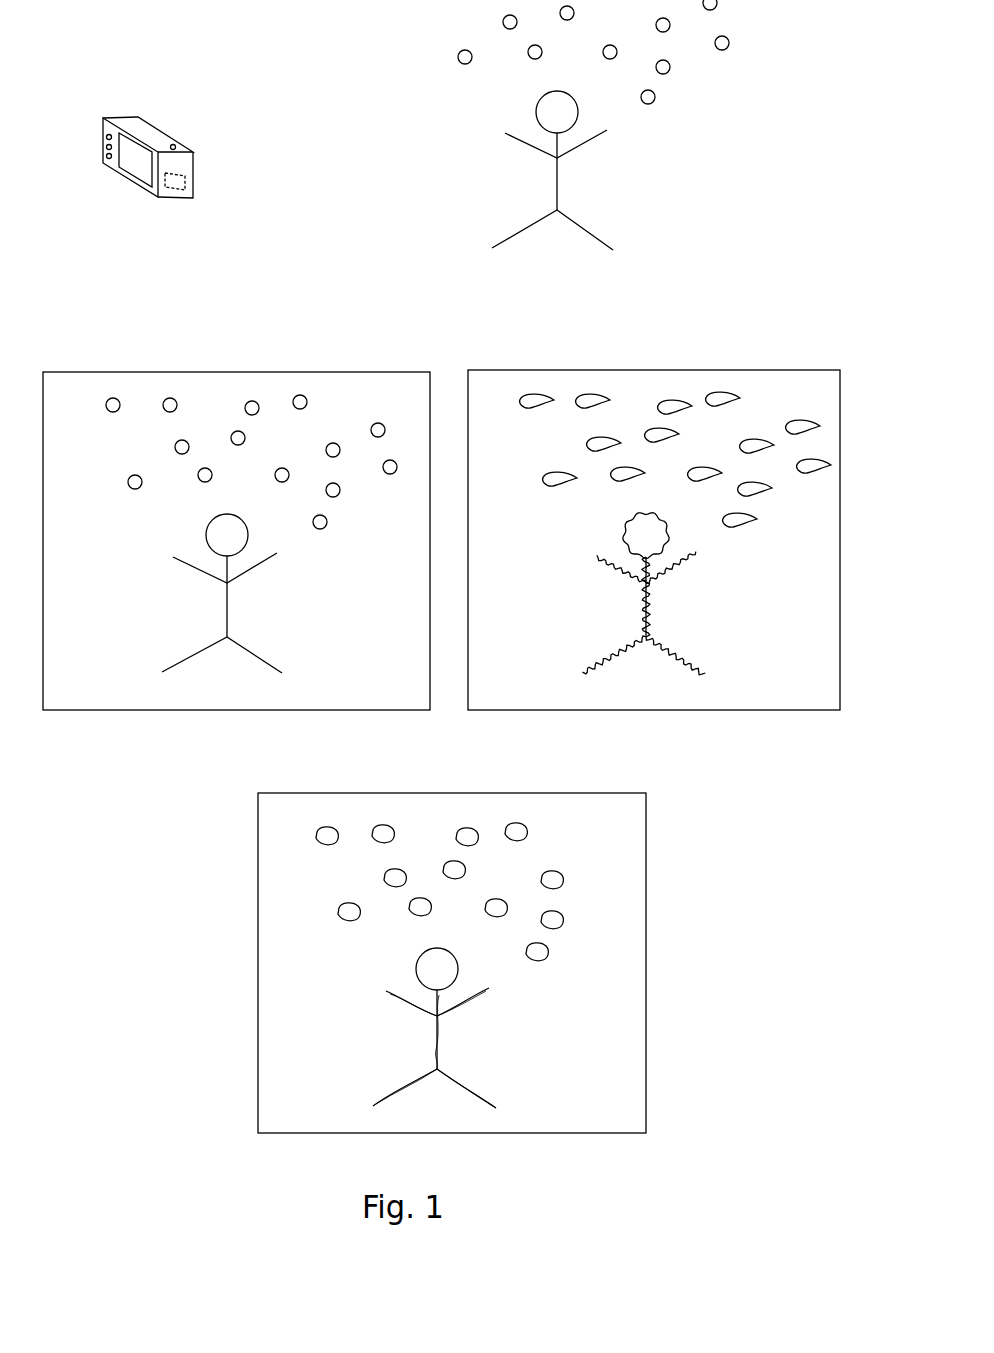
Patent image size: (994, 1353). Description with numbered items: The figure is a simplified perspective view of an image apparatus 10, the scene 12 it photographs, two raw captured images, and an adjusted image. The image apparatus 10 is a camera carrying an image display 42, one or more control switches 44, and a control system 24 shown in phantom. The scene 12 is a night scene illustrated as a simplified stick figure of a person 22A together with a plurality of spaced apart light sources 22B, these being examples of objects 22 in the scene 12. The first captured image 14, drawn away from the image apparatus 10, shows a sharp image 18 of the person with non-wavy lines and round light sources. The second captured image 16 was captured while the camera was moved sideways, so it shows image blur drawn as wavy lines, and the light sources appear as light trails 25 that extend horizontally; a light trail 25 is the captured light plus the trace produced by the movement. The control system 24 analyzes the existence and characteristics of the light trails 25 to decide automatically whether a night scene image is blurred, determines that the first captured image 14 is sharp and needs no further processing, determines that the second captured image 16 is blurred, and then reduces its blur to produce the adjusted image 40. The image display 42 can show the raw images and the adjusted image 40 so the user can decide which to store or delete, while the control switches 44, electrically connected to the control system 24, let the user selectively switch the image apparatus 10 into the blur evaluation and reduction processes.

The image apparatus 10 is at (120, 107).
The scene 12 is at (534, 125).
The first captured image 14 is at (236, 576).
The second captured image 16 is at (654, 548).
The sharp image 18 is at (268, 682).
The object 22 is at (388, 60).
The person 22A is at (558, 177).
The light sources 22B is at (655, 97).
The control system 24 is at (187, 182).
The light trail 25 is at (601, 399).
The adjusted image 40 is at (411, 987).
The image display 42 is at (143, 165).
The control switches 44 is at (107, 150).